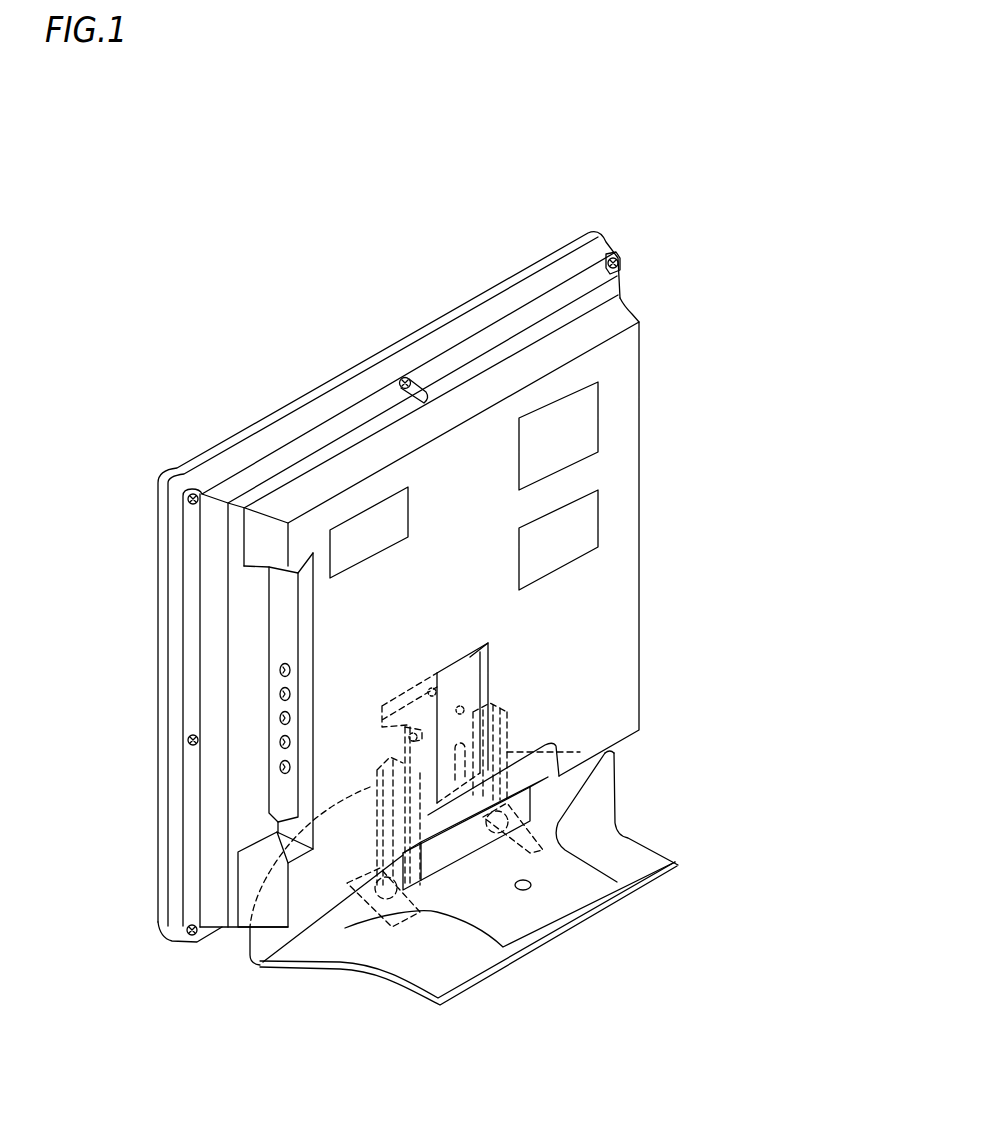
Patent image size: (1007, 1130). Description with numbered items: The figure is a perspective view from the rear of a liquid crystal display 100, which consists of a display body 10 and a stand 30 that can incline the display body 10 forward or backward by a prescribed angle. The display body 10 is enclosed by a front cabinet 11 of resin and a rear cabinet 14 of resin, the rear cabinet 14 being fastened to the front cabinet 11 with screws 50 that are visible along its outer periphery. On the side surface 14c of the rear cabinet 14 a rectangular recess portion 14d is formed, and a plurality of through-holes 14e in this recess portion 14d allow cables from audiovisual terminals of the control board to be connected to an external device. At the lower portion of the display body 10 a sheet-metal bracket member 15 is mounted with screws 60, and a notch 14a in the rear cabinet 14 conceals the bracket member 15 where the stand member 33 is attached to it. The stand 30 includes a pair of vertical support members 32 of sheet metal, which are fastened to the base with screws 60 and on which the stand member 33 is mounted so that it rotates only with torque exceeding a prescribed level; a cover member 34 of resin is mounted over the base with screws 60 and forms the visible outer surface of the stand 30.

The liquid crystal display 100 is at (190, 243).
The display body 10 is at (498, 160).
The front cabinet 11 is at (494, 288).
The rear cabinet 14 is at (552, 277).
The notch 14a is at (482, 650).
The side surface 14c is at (265, 541).
The recess portion 14d is at (305, 583).
The through-holes 14e is at (328, 783).
The bracket member 15 is at (490, 655).
The stand 30 is at (752, 785).
The vertical support members 32 is at (620, 777).
The stand member 33 is at (505, 712).
The cover member 34 is at (620, 856).
The screws 50 is at (623, 263).
The screws 60 is at (507, 733).